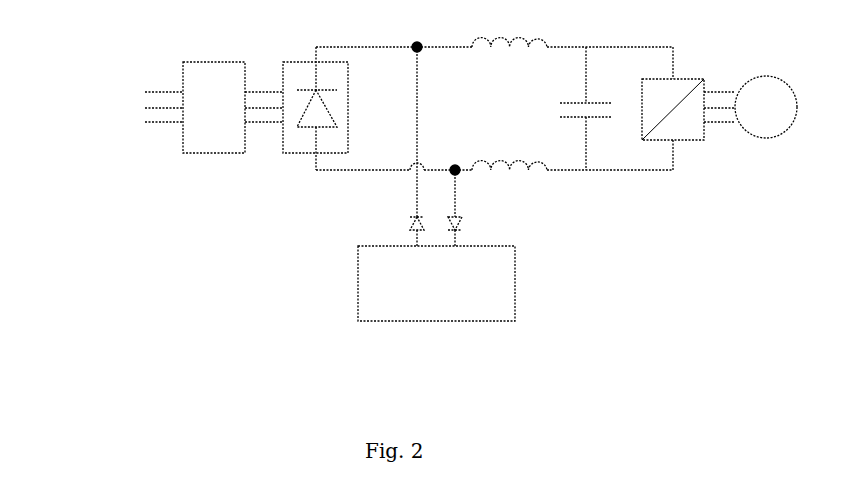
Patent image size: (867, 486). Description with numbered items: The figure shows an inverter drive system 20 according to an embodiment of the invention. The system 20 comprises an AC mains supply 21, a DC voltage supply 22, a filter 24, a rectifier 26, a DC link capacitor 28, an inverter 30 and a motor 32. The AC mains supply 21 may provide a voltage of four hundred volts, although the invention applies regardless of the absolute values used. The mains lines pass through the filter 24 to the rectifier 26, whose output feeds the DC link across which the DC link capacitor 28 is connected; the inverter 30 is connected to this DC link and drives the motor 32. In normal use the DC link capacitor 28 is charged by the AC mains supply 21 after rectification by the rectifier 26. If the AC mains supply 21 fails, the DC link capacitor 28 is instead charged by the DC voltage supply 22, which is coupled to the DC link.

The inverter drive system 20 is at (228, 268).
The AC mains supply 21 is at (96, 81).
The DC voltage supply 22 is at (358, 306).
The filter 24 is at (183, 140).
The rectifier 26 is at (283, 146).
The DC link capacitor 28 is at (597, 104).
The inverter 30 is at (687, 79).
The motor 32 is at (748, 134).